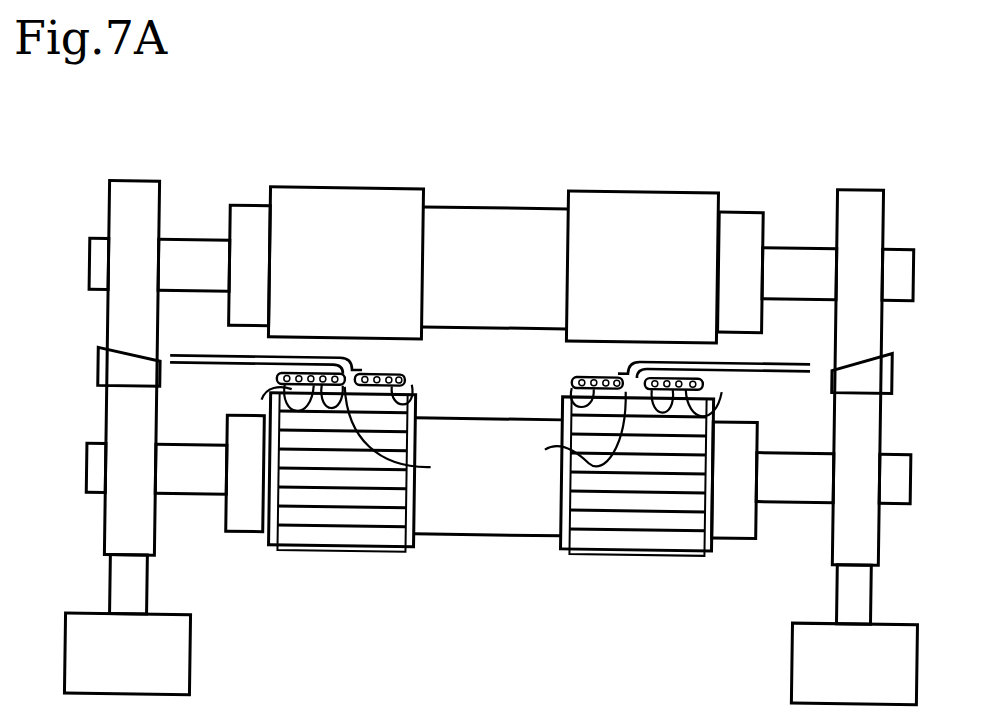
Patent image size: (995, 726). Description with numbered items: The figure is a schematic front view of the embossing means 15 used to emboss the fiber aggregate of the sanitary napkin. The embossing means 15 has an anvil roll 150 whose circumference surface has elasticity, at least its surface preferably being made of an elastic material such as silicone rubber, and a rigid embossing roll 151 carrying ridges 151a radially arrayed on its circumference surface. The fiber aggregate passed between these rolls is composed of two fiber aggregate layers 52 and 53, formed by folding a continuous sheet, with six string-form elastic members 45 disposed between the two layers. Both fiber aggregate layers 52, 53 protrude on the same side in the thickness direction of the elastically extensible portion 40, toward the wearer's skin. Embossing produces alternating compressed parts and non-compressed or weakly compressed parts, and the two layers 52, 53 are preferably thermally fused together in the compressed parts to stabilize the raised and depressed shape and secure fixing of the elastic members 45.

The embossing means 15 is at (497, 112).
The anvil roll 150 is at (355, 190).
The elastically extensible portion 40 is at (412, 366).
The fiber aggregate layer 53 is at (312, 376).
The elastic members 45 is at (262, 403).
The fiber aggregate layer 52 is at (484, 446).
The embossing roll 151 is at (340, 551).
The ridges 151a is at (378, 553).